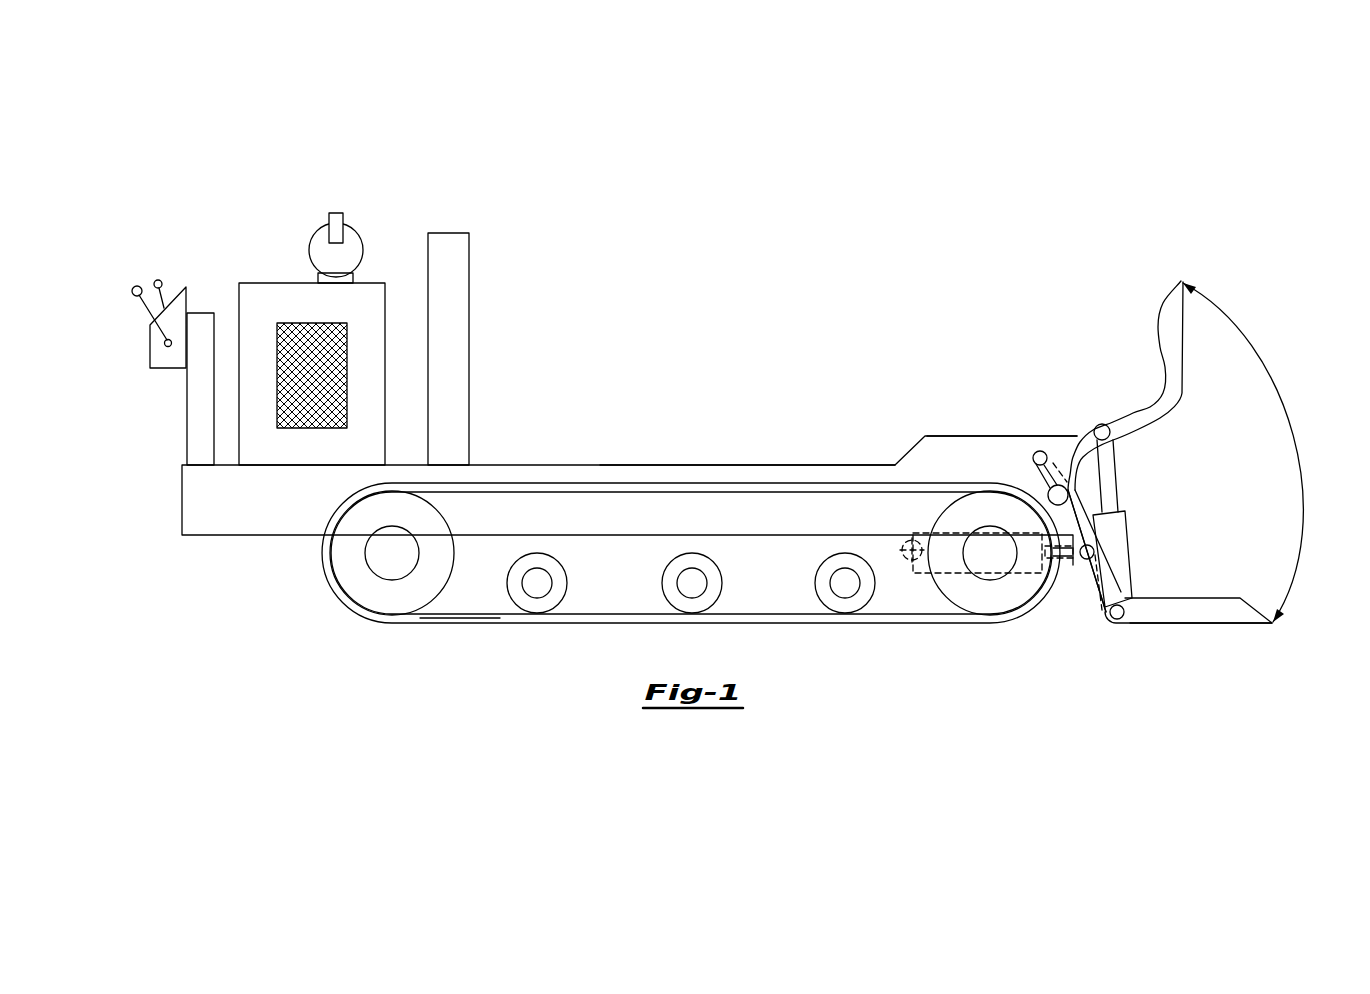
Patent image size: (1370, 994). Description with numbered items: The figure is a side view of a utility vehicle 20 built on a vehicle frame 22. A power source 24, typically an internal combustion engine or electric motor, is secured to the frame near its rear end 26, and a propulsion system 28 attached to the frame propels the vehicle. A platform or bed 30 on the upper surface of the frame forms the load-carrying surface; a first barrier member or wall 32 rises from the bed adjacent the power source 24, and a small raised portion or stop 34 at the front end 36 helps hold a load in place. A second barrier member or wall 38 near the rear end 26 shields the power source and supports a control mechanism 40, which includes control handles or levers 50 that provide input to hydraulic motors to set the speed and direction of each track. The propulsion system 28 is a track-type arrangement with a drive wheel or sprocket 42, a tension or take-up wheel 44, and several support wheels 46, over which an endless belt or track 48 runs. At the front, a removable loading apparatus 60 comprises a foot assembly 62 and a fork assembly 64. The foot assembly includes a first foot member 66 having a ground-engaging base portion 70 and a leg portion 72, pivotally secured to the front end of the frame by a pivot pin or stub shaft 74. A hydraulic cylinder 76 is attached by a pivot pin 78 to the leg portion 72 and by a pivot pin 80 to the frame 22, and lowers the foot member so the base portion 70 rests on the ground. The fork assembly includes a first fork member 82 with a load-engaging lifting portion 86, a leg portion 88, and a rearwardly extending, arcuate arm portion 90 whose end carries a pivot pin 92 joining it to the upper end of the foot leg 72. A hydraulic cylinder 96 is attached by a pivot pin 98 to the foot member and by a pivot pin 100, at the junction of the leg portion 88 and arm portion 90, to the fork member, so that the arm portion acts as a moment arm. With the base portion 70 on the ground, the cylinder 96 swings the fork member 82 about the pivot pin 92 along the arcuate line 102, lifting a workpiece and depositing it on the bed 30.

The utility vehicle 20 is at (552, 353).
The vehicle frame 22 is at (273, 542).
The power source 24 is at (267, 283).
The rear end 26 is at (182, 508).
The propulsion system 28 is at (368, 627).
The platform or bed 30 is at (647, 463).
The first barrier member or wall 32 is at (445, 248).
The raised portion or stop 34 is at (987, 435).
The front end 36 is at (1073, 490).
The second barrier member or wall 38 is at (203, 313).
The control mechanism 40 is at (165, 370).
The drive wheel or sprocket 42 is at (362, 585).
The tension or take up wheel or sprocket 44 is at (990, 592).
The support wheels or sprockets 46 is at (535, 605).
The endless belt or track 48 is at (450, 618).
The control handles or levers 50 is at (158, 280).
The loading apparatus 60 is at (1207, 480).
The foot assembly 62 is at (1188, 619).
The fork assembly 64 is at (1202, 345).
The first foot member 66 is at (1172, 630).
The base portion or ground engaging member 70 is at (1233, 613).
The leg portion 72 is at (1073, 560).
The pivot pins or stub shafts 74 is at (1040, 451).
The hydraulic cylinders 76 is at (1018, 575).
The pivot pin 78 is at (1085, 559).
The pivot pin 80 is at (913, 560).
The first fork member 82 is at (1126, 378).
The load engaging or lifting portion 86 is at (1170, 313).
The leg portion 88 is at (1160, 413).
The arm portion 90 is at (1077, 443).
The pivot pin 92 is at (1047, 488).
The hydraulic cylinders 96 is at (1135, 518).
The pivot pin 98 is at (1120, 620).
The pivot pin 100 is at (1102, 424).
The arcuate line 102 is at (1263, 355).